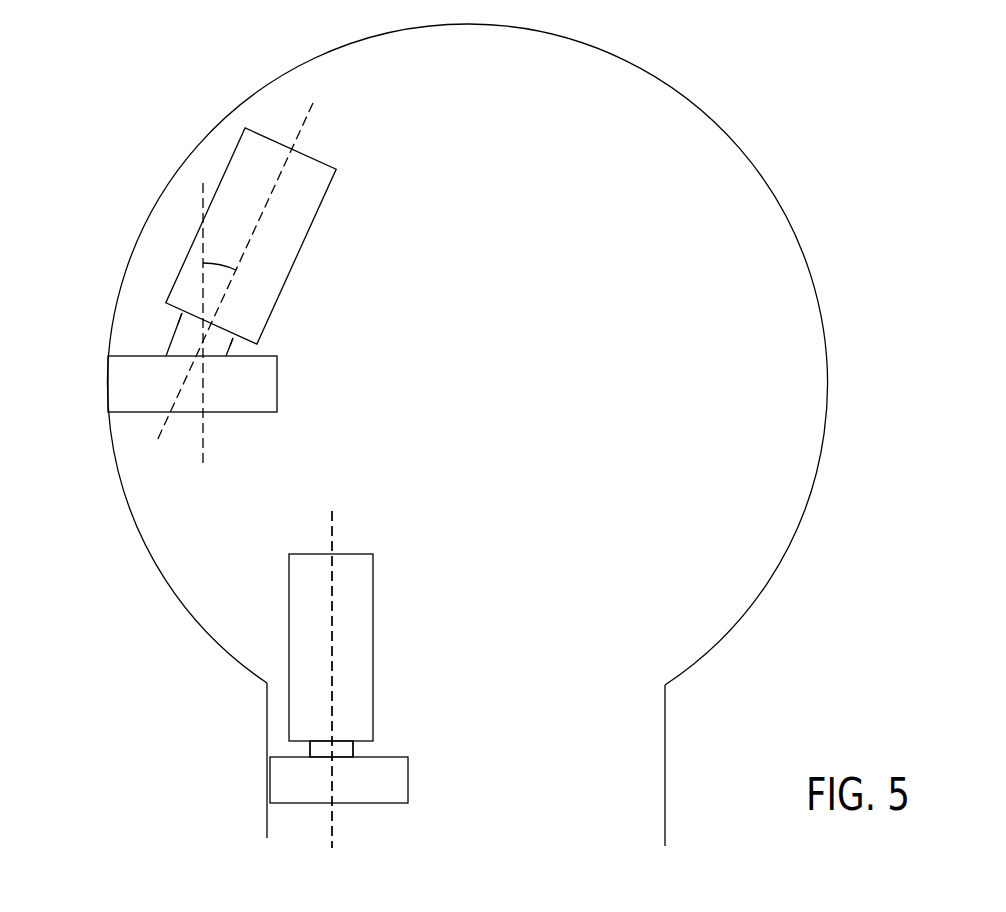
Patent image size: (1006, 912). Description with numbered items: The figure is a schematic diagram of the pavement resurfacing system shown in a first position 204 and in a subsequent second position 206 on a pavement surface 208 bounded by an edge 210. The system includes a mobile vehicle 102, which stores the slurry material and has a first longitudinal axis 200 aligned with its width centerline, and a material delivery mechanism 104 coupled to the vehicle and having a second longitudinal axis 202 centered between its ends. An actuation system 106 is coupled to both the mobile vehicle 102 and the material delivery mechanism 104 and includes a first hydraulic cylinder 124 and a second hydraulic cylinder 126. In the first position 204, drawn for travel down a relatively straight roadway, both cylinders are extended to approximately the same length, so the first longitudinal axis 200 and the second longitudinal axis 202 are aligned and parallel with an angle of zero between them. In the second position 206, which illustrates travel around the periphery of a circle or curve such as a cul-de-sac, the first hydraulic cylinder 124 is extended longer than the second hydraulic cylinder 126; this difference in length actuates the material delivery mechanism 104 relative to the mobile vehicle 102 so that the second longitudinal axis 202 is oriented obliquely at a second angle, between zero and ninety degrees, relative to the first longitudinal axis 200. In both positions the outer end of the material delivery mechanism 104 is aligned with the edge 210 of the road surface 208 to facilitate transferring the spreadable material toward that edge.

The mobile vehicle 102 is at (318, 217).
The material delivery mechanism 104 is at (270, 413).
The actuation system 106 is at (166, 317).
The first hydraulic cylinder 124 is at (170, 338).
The second hydraulic cylinder 126 is at (257, 348).
The first longitudinal axis 200 is at (307, 118).
The second longitudinal axis 202 is at (205, 458).
The first position 204 is at (190, 653).
The second position 206 is at (186, 105).
The pavement surface 208 is at (621, 309).
The edge 210 is at (118, 473).